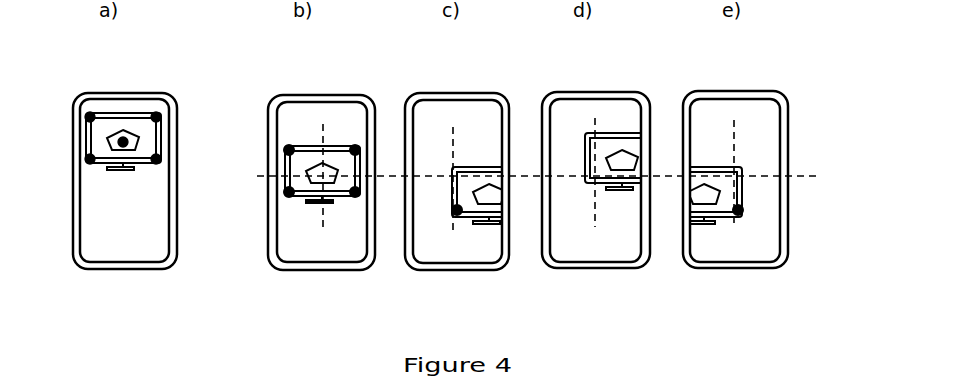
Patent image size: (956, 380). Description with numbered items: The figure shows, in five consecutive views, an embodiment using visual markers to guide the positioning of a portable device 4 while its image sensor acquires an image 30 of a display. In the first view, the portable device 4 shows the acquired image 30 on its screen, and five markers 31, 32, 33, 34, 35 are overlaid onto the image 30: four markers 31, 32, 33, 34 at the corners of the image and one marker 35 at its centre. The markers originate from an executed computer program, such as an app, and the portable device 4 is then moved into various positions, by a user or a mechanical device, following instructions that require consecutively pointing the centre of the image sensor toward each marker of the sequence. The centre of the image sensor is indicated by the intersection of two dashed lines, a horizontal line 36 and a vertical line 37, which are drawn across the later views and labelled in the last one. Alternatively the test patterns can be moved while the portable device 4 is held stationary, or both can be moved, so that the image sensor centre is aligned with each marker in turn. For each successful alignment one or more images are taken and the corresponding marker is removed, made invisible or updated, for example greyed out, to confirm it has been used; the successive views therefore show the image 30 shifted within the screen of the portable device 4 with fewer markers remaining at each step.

In FIG. 4a, the portable device 4 is at (108, 93).
In FIG. 4b, the portable device 4 is at (313, 95).
In FIG. 4c, the portable device 4 is at (450, 93).
In FIG. 4d, the portable device 4 is at (588, 92).
In FIG. 4e, the portable device 4 is at (730, 91).
In FIG. 4a, the image 30 is at (123, 113).
In FIG. 4a, the marker 31 is at (82, 117).
In FIG. 4a, the marker 32 is at (85, 157).
In FIG. 4a, the marker 33 is at (160, 117).
In FIG. 4a, the marker 34 is at (160, 153).
In FIG. 4a, the marker 35 is at (127, 143).
In FIG. 4e, the dashed line 36 is at (803, 177).
In FIG. 4e, the dashed line 37 is at (732, 130).